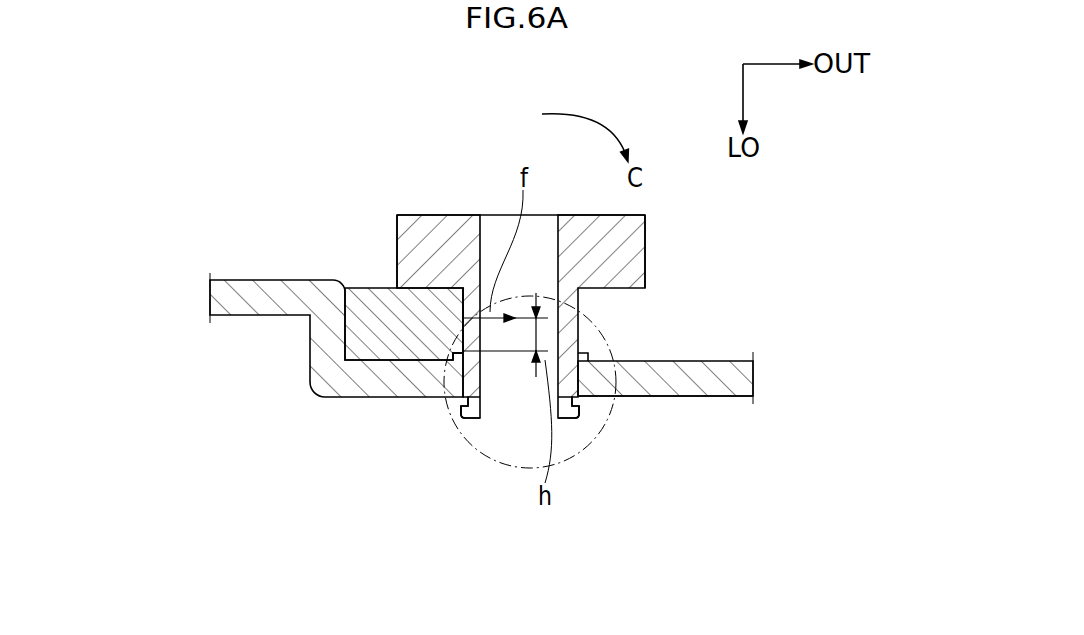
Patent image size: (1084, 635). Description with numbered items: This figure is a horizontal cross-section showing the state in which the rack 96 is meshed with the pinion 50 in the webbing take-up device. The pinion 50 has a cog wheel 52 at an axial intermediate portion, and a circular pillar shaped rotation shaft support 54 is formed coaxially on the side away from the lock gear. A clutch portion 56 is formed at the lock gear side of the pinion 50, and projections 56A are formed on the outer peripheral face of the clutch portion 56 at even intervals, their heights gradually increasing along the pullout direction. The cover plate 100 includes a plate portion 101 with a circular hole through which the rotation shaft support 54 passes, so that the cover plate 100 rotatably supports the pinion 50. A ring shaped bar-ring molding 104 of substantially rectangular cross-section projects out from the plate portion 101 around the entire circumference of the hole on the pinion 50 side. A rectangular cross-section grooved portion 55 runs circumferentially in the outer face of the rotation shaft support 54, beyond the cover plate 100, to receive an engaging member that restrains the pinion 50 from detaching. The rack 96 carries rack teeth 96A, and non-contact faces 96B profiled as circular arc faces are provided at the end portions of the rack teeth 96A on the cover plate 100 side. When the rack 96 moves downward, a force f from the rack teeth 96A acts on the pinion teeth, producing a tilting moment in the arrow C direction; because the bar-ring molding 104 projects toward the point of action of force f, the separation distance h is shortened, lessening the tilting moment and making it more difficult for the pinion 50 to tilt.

The pinion 50 is at (519, 338).
The cog wheel 52 is at (578, 300).
The rotation shaft support 54 is at (470, 418).
The grooved portion 55 is at (464, 410).
The clutch portion 56 is at (420, 215).
The projections 56A is at (397, 243).
The rack 96 is at (372, 332).
The rack teeth 96A is at (478, 310).
The non-contact faces 96B is at (432, 360).
The cover plate 100 is at (720, 361).
The plate portion 101 is at (698, 391).
The bar-ring molding 104 is at (460, 397).